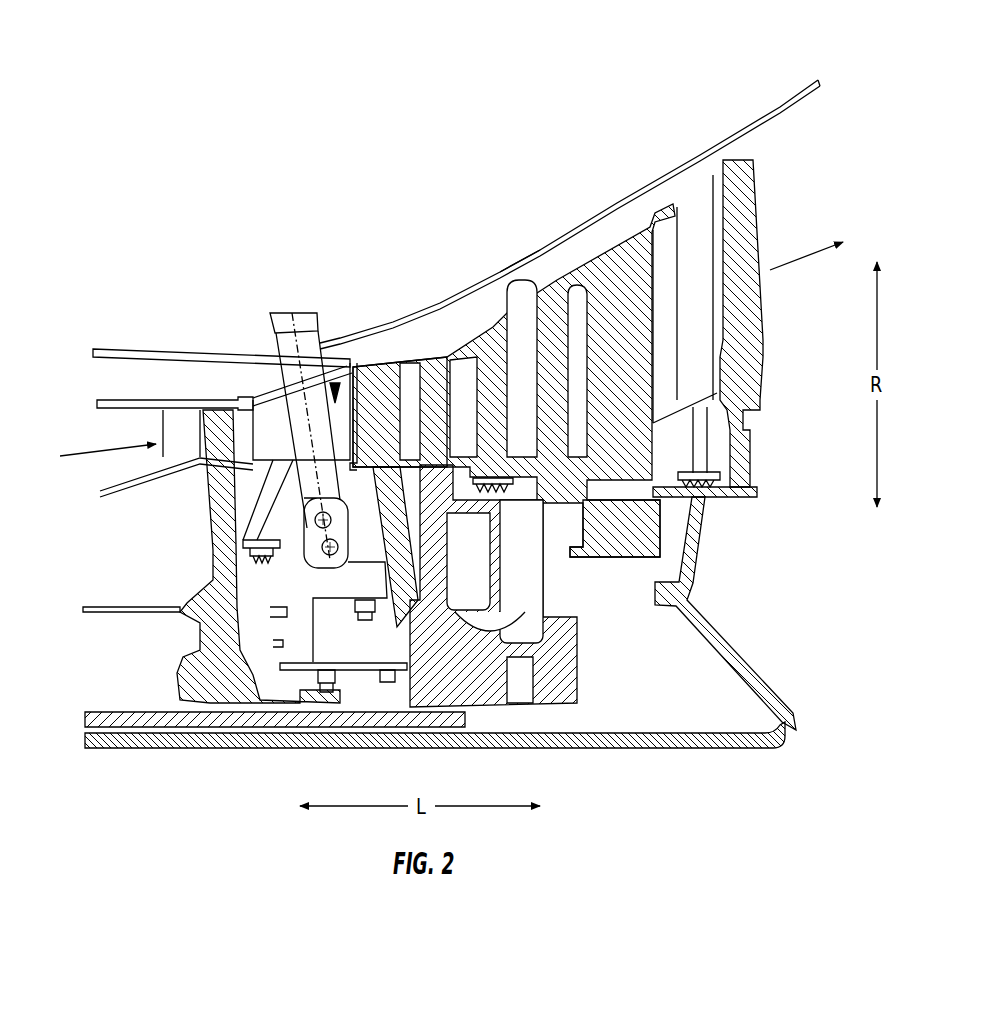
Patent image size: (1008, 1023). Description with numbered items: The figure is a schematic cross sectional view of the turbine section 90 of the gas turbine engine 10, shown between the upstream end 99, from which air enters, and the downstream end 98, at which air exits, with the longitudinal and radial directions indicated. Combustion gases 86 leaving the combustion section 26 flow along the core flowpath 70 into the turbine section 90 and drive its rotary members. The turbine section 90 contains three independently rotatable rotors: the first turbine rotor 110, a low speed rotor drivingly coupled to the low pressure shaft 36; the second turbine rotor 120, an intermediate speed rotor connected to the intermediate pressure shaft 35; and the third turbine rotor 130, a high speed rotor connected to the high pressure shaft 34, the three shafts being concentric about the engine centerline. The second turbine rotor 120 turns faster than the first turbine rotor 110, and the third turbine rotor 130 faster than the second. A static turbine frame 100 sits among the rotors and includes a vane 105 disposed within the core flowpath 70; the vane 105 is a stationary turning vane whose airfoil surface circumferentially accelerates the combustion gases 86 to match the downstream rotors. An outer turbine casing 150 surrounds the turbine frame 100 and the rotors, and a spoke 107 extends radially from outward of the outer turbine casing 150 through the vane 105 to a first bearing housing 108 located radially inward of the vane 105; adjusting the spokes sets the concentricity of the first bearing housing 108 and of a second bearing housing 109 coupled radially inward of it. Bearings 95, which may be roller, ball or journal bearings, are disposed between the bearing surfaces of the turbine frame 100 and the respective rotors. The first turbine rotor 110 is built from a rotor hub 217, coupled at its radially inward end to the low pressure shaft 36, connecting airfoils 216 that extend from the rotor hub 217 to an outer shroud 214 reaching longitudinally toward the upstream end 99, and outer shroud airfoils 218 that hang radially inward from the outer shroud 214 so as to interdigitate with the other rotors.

The gas turbine engine 10 is at (603, 50).
The turbine section 90 is at (607, 145).
The outer turbine casing 150 is at (505, 290).
The combustion section 26 is at (70, 388).
The spoke 107 is at (305, 337).
The vane 105 is at (347, 367).
The outer shroud 214 is at (495, 325).
The connecting airfoil 216 is at (638, 362).
The combustion gases 86 is at (82, 454).
The downstream end 98 is at (815, 331).
The first turbine rotor 110 is at (752, 388).
The core flowpath 70 is at (156, 441).
The turbine frame 100 is at (286, 449).
The outer shroud airfoil 218 is at (390, 393).
The upstream end 99 is at (61, 532).
The high pressure shaft 34 is at (137, 608).
The first bearing housing 108 is at (323, 583).
The bearing 95 is at (352, 618).
The second bearing housing 109 is at (330, 663).
The second turbine rotor 120 is at (420, 641).
The third turbine rotor 130 is at (183, 672).
The intermediate pressure shaft 35 is at (103, 712).
The low pressure shaft 36 is at (645, 740).
The rotor hub 217 is at (725, 640).